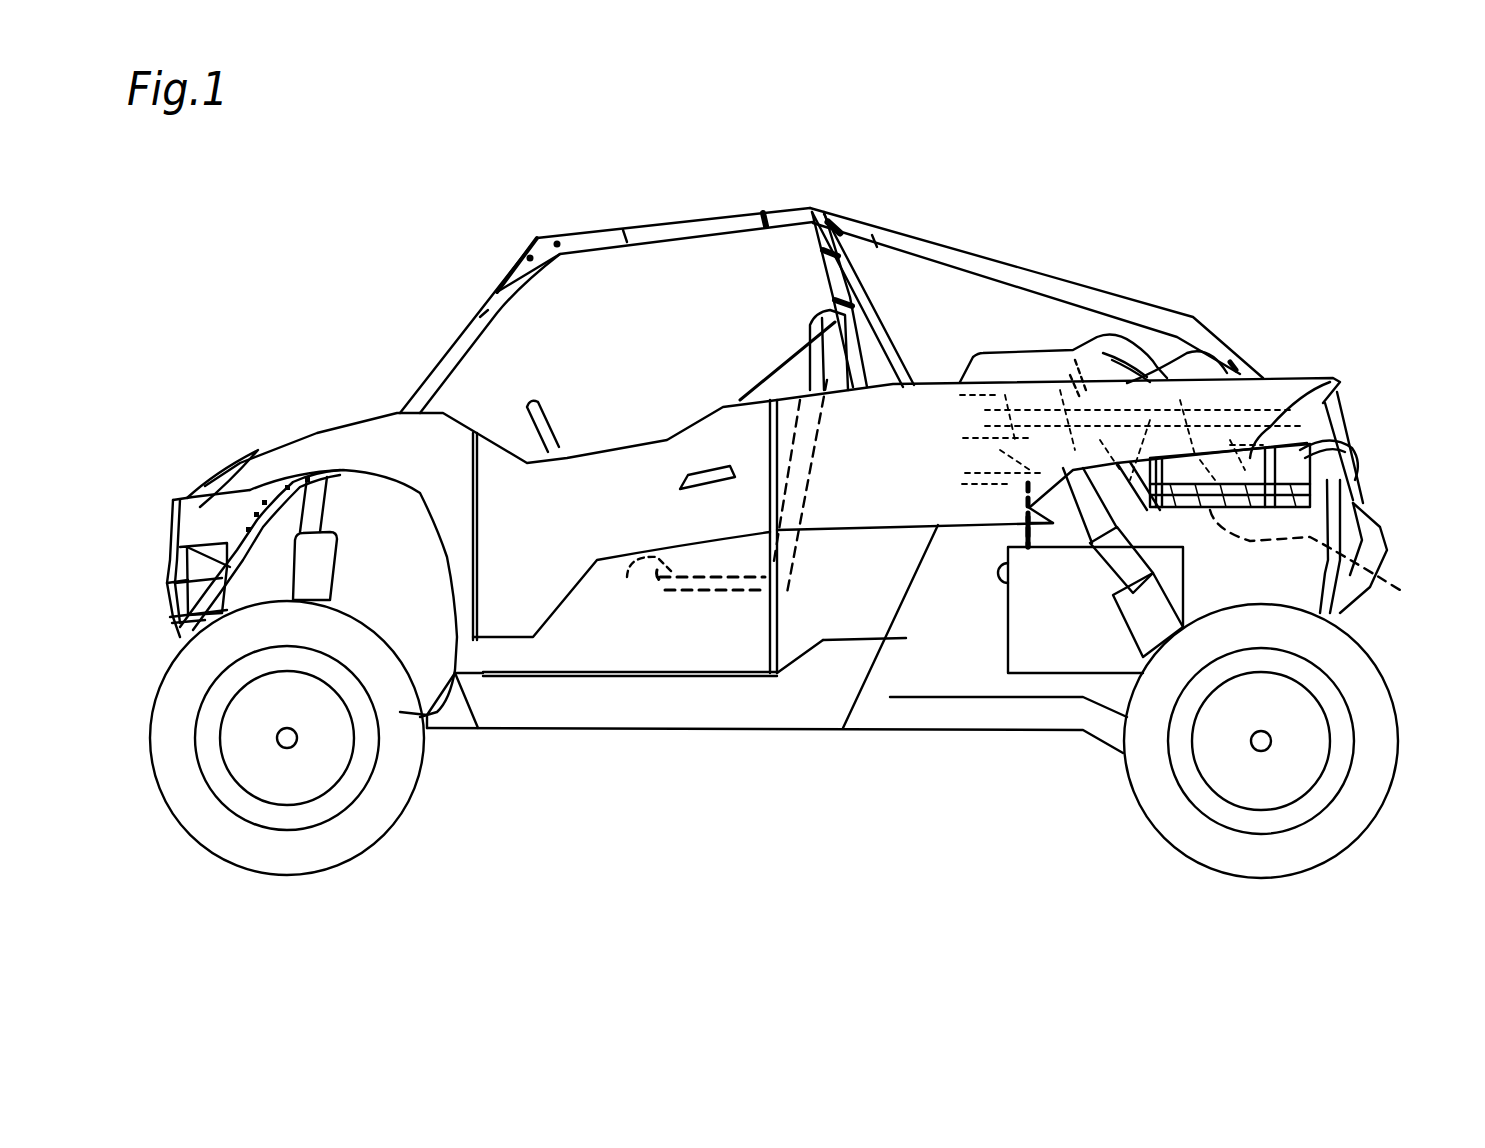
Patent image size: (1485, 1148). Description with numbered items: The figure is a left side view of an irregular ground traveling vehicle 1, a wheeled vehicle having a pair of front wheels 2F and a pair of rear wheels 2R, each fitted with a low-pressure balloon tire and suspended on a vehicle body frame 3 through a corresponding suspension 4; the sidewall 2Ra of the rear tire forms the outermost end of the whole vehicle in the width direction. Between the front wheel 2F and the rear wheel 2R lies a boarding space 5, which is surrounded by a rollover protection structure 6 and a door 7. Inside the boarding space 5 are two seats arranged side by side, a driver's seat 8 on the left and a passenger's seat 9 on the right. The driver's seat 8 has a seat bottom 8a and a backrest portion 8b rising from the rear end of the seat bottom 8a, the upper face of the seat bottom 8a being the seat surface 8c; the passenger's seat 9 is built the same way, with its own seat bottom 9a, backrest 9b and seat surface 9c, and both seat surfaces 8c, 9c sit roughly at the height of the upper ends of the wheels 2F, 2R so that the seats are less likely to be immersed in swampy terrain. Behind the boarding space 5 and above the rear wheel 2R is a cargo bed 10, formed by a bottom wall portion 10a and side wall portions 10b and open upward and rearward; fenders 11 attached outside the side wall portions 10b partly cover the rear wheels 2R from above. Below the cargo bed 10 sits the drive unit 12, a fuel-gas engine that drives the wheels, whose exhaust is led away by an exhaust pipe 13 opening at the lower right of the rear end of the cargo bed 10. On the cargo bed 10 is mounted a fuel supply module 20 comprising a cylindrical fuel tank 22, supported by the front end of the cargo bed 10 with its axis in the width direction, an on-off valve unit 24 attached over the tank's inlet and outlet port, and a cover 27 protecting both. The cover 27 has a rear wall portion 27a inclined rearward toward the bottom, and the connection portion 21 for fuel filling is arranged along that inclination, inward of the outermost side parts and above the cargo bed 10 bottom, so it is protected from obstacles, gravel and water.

The irregular ground traveling vehicle 1 is at (1202, 150).
The front wheels 2F is at (291, 854).
The rear wheels 2R is at (1238, 853).
The sidewall 2Ra is at (1353, 658).
The vehicle body frame 3 is at (278, 478).
The suspension 4 is at (333, 510).
The boarding space 5 is at (513, 330).
The rollover protection structure 6 is at (616, 232).
The door 7 is at (573, 640).
The driver's seat 8 is at (774, 269).
The passenger's seat 9 is at (800, 370).
The seat bottom 8a is at (713, 698).
The seat rail 9a is at (703, 585).
The backrest portion 8b is at (783, 349).
The seat back 9b is at (830, 365).
The seat surface 8c is at (637, 692).
The seat surface 9c is at (627, 577).
The cargo bed 10 is at (1222, 398).
The bottom wall portion 10a is at (1287, 500).
The side wall portions 10b is at (1340, 393).
The fenders 11 is at (1250, 456).
The drive unit 12 is at (1043, 665).
The exhaust pipe 13 is at (997, 583).
The fuel supply module 20 is at (1102, 337).
The connection portion 21 is at (1319, 559).
The fuel tank 22 is at (1070, 375).
The on-off valve unit 24 is at (1075, 360).
The cover 27 is at (1128, 353).
The rear wall portion 27a is at (1170, 377).